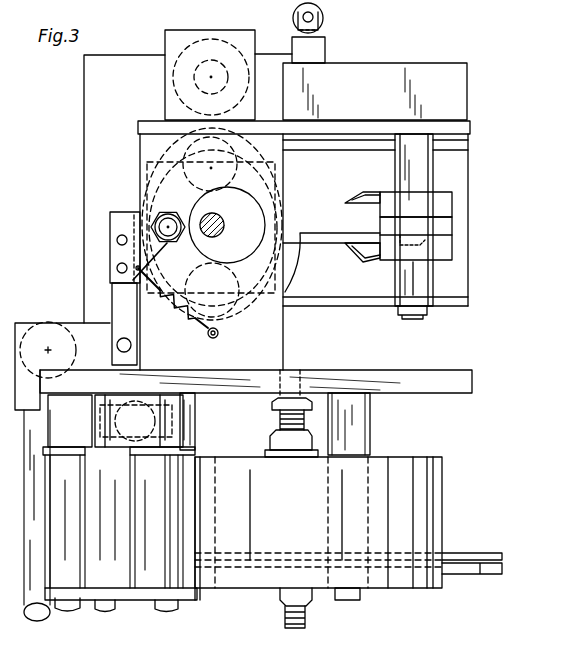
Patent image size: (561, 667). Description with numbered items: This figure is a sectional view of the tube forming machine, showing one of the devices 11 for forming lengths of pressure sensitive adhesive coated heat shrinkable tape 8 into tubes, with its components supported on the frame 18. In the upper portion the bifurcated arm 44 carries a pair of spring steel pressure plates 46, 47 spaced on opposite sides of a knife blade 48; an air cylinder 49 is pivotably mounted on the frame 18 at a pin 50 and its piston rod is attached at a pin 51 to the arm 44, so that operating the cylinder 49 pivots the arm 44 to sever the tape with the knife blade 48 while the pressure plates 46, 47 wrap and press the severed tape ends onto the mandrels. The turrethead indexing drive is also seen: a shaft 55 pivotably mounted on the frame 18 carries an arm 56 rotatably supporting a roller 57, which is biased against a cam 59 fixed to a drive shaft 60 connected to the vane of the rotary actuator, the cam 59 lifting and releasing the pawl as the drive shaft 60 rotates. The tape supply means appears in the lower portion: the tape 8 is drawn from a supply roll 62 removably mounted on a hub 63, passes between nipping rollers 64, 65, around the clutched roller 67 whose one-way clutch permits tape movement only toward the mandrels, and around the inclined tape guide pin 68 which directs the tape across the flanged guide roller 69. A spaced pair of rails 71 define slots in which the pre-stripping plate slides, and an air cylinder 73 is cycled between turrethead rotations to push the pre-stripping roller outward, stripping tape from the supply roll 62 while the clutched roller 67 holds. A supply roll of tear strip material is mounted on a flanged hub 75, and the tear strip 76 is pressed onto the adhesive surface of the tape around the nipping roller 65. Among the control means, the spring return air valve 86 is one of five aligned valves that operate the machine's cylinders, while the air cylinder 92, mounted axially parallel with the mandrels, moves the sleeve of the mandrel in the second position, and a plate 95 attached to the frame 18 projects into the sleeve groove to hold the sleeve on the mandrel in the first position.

The pressure sensitive adhesive coated heat shrinkable tape 8 is at (203, 583).
The device 11 is at (178, 149).
The frame 18 is at (345, 126).
The bifurcated arm 44 is at (455, 147).
The pressure plate 46 is at (376, 192).
The pressure plate 47 is at (368, 254).
The knife blade 48 is at (356, 232).
The air cylinder 49 is at (455, 208).
The pin 50 is at (400, 245).
The pin 51 is at (413, 285).
The shaft 55 is at (131, 346).
The arm 56 is at (113, 253).
The roller 57 is at (168, 210).
The cam 59 is at (245, 214).
The drive shaft 60 is at (242, 228).
The supply roll 62 is at (423, 508).
The hub 63 is at (245, 588).
The nipping roller 64 is at (118, 592).
The nipping roller 65 is at (182, 597).
The clutched roller 67 is at (65, 452).
The inclined tape guide pin 68 is at (35, 617).
The guide roller 69 is at (62, 323).
The rails 71 is at (185, 409).
The air cylinder 73 is at (124, 453).
The flanged hub 75 is at (461, 560).
The tear strip 76 is at (462, 565).
The spring return air valve 86 is at (373, 74).
The air cylinder 92 is at (165, 97).
The plate 95 is at (84, 147).